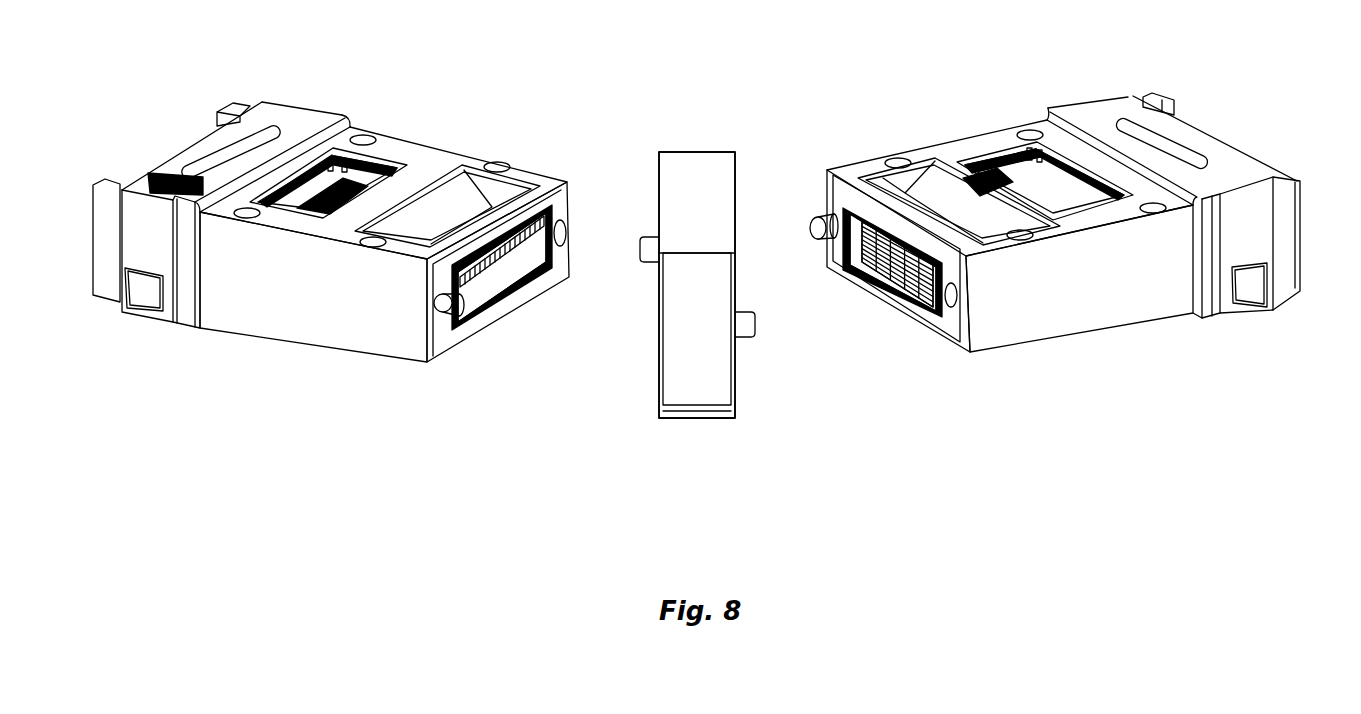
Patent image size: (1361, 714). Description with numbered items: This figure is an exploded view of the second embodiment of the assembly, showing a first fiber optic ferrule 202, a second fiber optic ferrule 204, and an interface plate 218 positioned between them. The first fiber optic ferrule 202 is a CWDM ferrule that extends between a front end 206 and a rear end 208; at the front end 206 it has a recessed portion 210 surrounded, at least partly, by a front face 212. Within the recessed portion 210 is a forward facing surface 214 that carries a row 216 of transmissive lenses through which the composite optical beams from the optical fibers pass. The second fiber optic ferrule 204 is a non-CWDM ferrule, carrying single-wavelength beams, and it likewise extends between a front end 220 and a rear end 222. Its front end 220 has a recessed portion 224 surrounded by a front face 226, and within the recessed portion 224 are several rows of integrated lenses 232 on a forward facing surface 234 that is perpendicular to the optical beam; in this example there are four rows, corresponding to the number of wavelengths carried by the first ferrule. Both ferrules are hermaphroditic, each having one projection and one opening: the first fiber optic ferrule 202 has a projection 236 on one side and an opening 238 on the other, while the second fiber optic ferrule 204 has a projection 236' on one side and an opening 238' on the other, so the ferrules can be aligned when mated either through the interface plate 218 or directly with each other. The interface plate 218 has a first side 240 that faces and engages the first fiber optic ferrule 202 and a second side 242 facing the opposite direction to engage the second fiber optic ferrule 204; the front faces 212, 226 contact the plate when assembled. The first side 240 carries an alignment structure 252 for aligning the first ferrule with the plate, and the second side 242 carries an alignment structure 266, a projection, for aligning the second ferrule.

The first fiber optic ferrule 202 is at (317, 341).
The second fiber optic ferrule 204 is at (1113, 333).
The front end 206 is at (568, 172).
The rear end 208 is at (92, 298).
The recessed portion 210 is at (495, 282).
The front face 212 is at (560, 203).
The forward facing surface 214 is at (522, 267).
The row of transmissive lenses 216 is at (506, 243).
The interface plate 218 is at (737, 170).
The front end 220 is at (826, 168).
The rear end 222 is at (1304, 279).
The recessed portion 224 is at (900, 290).
The front face 226 is at (855, 272).
The integrated lenses 232 is at (922, 307).
The forward facing surface 234 is at (932, 305).
The projection 236 is at (448, 353).
The projection 236' is at (817, 278).
The opening 238 is at (563, 282).
The opening 238' is at (963, 358).
The first side 240 is at (649, 369).
The second side 242 is at (751, 207).
The alignment structure 252 is at (651, 264).
The alignment structure 266 is at (745, 311).